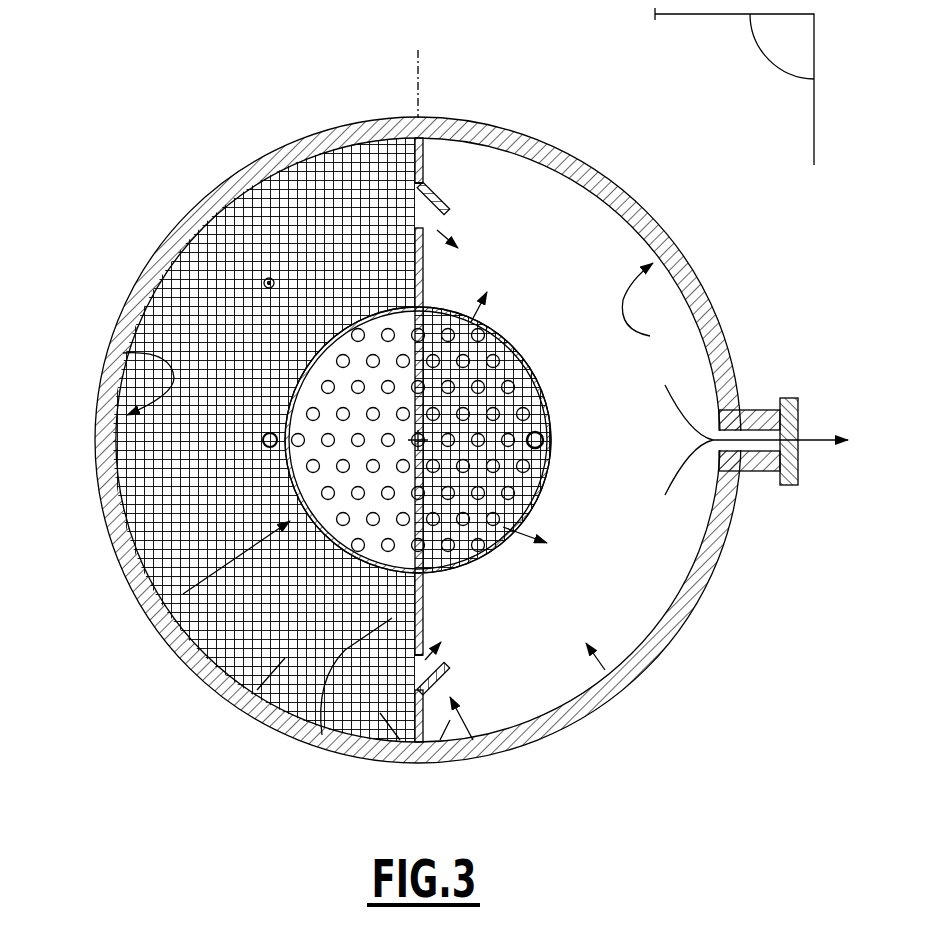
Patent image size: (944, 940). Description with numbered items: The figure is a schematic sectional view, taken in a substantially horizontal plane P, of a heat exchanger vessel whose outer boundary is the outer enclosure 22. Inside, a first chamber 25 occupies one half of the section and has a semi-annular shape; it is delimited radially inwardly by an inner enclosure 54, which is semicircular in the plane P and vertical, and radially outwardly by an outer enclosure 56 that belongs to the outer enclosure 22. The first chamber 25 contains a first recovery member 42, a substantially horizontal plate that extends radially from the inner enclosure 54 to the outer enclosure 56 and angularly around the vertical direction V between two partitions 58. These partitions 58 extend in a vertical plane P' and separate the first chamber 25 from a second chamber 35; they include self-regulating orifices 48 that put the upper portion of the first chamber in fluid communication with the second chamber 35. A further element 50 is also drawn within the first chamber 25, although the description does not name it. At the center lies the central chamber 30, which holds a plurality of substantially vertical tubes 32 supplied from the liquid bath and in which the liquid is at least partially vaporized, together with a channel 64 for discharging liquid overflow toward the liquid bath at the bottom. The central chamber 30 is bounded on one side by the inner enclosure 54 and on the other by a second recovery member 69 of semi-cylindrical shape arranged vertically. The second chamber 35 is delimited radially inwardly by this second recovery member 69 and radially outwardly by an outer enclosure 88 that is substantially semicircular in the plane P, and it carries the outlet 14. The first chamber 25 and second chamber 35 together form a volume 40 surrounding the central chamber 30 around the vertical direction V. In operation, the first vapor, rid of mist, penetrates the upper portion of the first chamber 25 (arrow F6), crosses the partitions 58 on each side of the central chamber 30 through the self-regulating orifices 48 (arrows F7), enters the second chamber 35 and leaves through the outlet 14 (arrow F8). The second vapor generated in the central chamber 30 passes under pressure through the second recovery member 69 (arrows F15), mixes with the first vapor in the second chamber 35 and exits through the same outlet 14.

The outlet 14 is at (758, 408).
The outer enclosure 22 is at (179, 230).
The first chamber 25 is at (258, 706).
The central chamber 30 is at (497, 379).
The tubes 32 is at (384, 330).
The second chamber 35 is at (605, 670).
The volume 40 is at (414, 765).
The first recovery member 42 is at (203, 307).
The self-regulating orifices 48 is at (455, 181).
The tube 50 is at (262, 443).
The inner enclosure 54 is at (170, 624).
The outer enclosure 56 is at (123, 353).
The partitions 58 is at (424, 166).
The channel 64 is at (544, 446).
The second recovery member 69 is at (546, 392).
The outer enclosure 88 is at (650, 336).
The arrow F6 is at (269, 277).
The arrows F7 is at (420, 226).
The arrow F8 is at (807, 437).
The arrows F15 is at (471, 318).
The vertical direction V is at (418, 448).
The horizontal plane P is at (734, 86).
The vertical plane P' is at (440, 73).